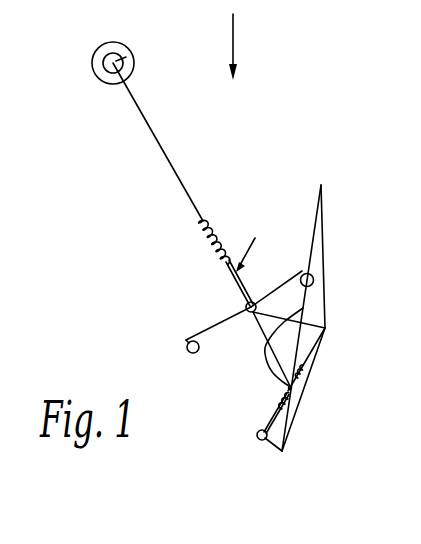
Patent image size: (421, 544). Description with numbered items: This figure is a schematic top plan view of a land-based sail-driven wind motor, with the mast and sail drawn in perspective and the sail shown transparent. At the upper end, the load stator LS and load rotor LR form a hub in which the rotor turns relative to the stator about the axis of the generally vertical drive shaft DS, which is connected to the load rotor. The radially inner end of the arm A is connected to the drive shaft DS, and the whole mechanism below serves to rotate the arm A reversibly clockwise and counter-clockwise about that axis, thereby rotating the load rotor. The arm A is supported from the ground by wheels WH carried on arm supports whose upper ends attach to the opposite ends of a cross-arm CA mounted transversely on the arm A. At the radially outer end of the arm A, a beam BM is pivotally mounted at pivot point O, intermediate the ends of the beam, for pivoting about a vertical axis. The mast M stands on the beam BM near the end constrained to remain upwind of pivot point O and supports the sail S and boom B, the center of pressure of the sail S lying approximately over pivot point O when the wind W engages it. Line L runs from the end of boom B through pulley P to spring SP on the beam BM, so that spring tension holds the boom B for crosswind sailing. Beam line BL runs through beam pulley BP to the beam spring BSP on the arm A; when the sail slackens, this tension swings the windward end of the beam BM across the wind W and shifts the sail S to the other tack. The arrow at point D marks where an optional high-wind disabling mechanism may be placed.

The wind W is at (245, 47).
The drive shaft DS is at (114, 45).
The load rotor LR is at (126, 57).
The load stator LS is at (128, 72).
The arm A is at (167, 158).
The beam spring BSP is at (215, 233).
The point D is at (251, 252).
The wheels WH is at (193, 332).
The cross-arm CA is at (258, 296).
The beam pulley BP is at (251, 314).
The beam line BL is at (270, 357).
The mast M is at (325, 252).
The sail S is at (303, 308).
The beam BM is at (323, 333).
The boom B is at (302, 375).
The pivot point O is at (299, 391).
The spring SP is at (255, 413).
The pulley P is at (257, 435).
The line L is at (268, 443).